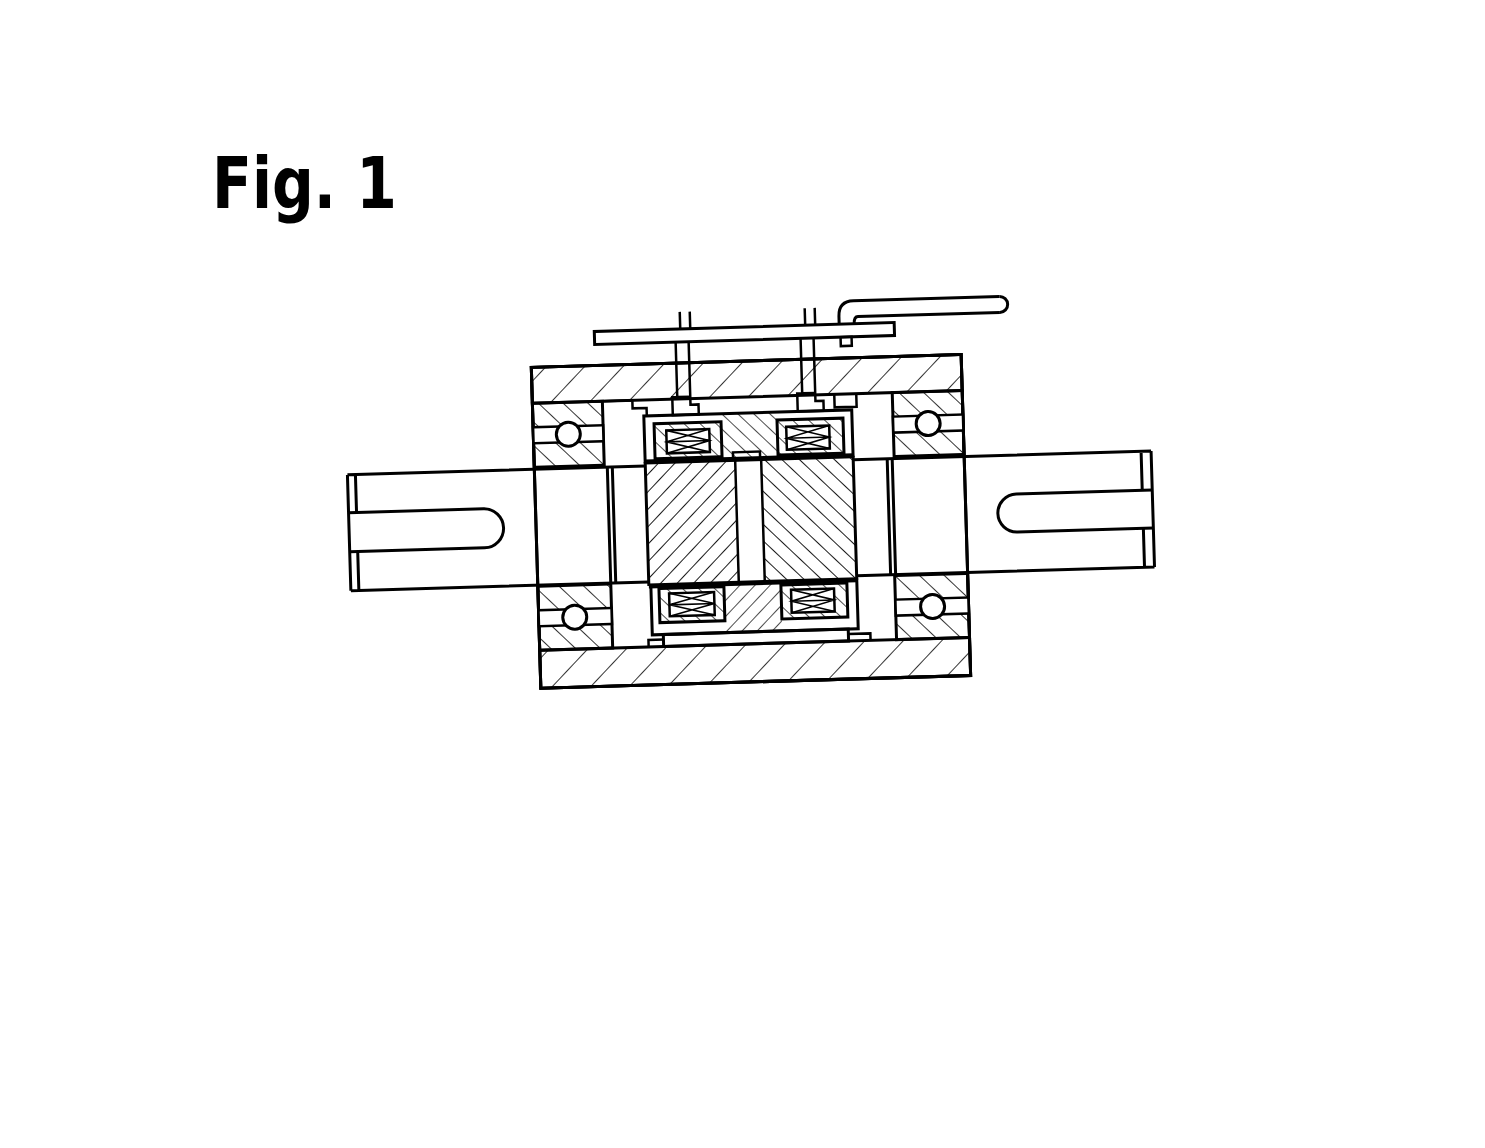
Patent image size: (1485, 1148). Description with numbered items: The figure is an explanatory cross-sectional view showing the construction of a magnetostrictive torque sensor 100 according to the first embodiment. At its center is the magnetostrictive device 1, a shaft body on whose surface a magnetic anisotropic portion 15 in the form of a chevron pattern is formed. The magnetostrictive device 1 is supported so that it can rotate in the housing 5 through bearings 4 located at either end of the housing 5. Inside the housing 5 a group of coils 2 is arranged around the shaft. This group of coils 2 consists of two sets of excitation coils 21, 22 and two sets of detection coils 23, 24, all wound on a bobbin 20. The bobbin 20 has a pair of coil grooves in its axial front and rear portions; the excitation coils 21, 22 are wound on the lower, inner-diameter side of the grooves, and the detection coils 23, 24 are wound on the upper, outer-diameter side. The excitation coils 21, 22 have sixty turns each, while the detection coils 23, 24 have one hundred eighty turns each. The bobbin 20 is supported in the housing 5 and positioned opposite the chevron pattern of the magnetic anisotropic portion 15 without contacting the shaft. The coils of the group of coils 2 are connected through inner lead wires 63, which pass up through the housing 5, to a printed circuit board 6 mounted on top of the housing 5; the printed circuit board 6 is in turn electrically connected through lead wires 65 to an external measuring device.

The magnetostrictive torque sensor 100 is at (967, 237).
The magnetostrictive device 1 is at (1070, 560).
The group of coils 2 is at (742, 630).
The bearings 4 is at (538, 420).
The housing 5 is at (595, 675).
The printed circuit board 6 is at (647, 327).
The magnetic anisotropic portion 15 is at (840, 538).
The bobbin 20 is at (858, 612).
The excitation coil 21 is at (640, 443).
The excitation coil 22 is at (885, 448).
The detection coil 23 is at (663, 402).
The detection coil 24 is at (843, 420).
The inner lead wires 63 is at (700, 335).
The lead wires 65 is at (965, 300).